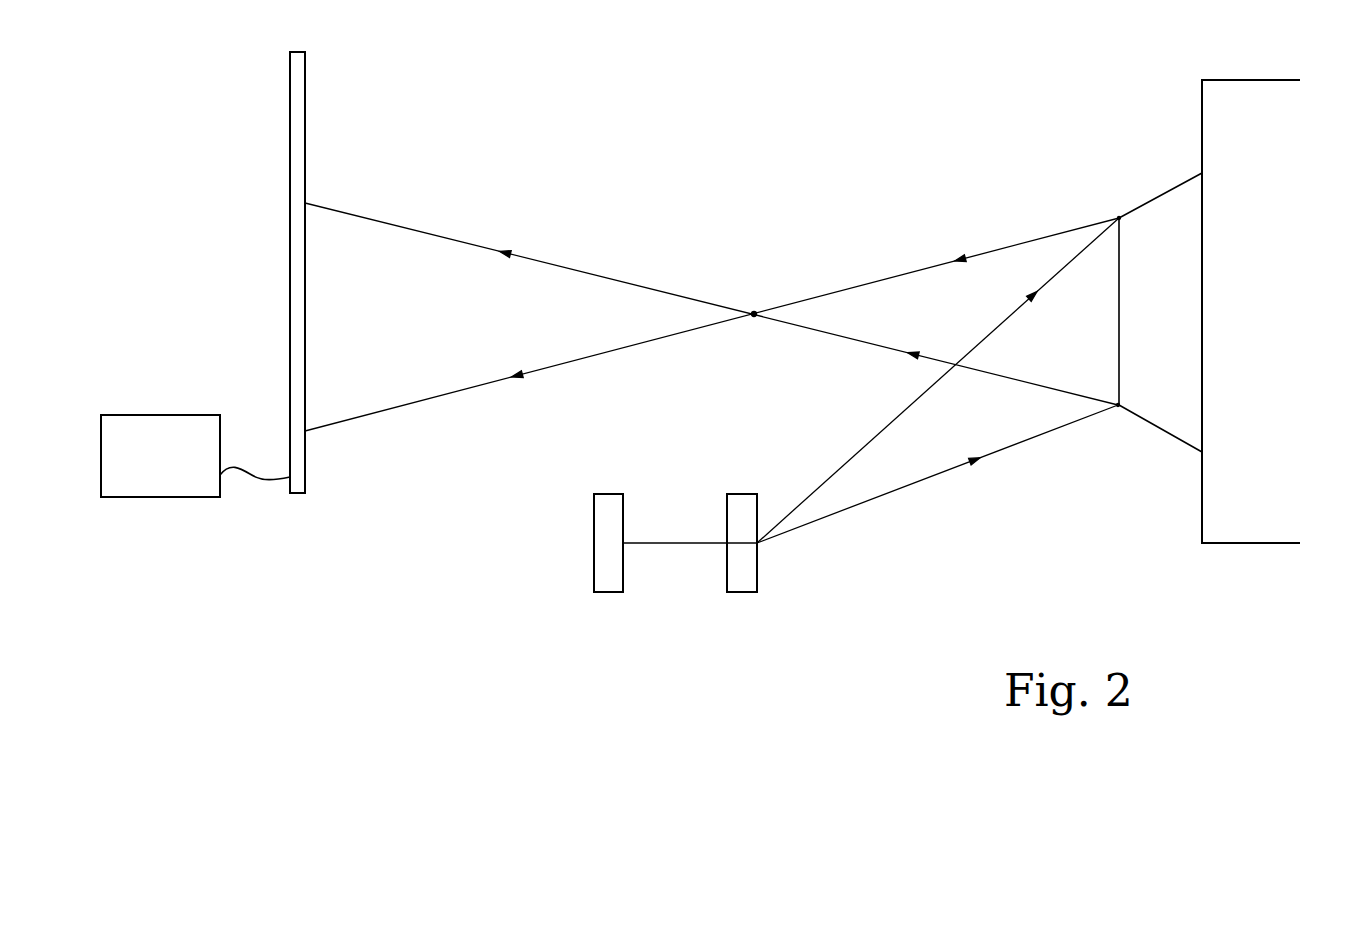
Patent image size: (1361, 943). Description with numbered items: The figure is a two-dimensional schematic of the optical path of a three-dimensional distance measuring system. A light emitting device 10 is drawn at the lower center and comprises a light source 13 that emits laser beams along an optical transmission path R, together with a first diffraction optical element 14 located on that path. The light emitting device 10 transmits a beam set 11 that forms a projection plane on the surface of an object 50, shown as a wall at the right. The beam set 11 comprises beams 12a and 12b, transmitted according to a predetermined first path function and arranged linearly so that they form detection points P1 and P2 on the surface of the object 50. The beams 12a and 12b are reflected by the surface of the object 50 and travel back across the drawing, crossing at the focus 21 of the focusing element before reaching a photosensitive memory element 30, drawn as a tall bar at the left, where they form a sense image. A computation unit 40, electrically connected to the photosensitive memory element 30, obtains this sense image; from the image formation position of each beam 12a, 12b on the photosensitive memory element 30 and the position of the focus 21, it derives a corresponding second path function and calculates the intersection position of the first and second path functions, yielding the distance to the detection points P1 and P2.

The light emitting device 10 is at (675, 574).
The beam set 11 is at (873, 500).
The beam 12a is at (1040, 437).
The beam 12b is at (843, 466).
The light source 13 is at (609, 594).
The first diffraction optical element 14 is at (744, 594).
The focus 21 is at (756, 314).
The photosensitive memory element 30 is at (288, 127).
The computation unit 40 is at (147, 498).
The object 50 is at (1157, 228).
The optical transmission path R is at (666, 540).
The detection point P1 is at (1117, 423).
The detection point P2 is at (1117, 203).